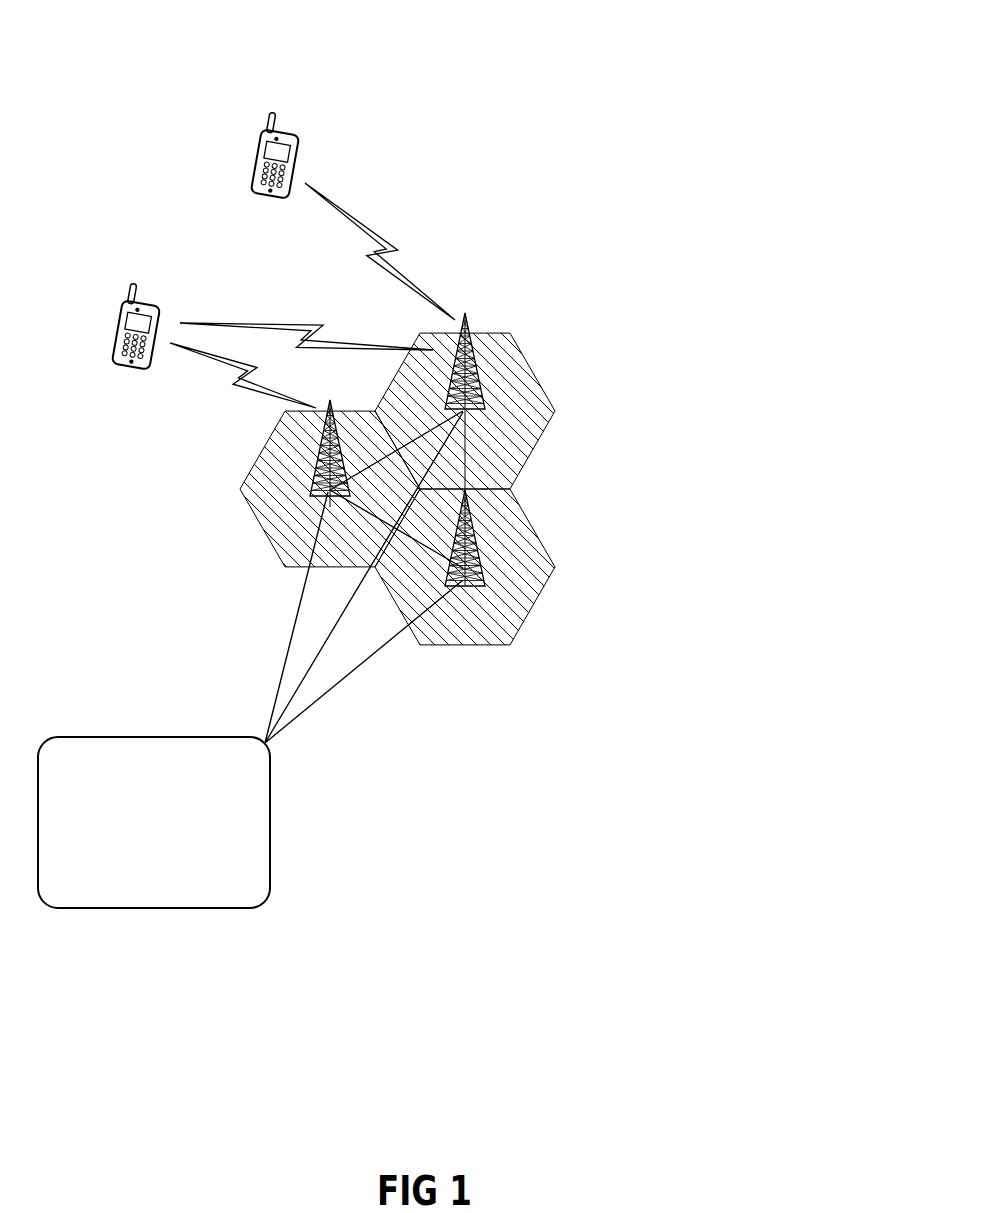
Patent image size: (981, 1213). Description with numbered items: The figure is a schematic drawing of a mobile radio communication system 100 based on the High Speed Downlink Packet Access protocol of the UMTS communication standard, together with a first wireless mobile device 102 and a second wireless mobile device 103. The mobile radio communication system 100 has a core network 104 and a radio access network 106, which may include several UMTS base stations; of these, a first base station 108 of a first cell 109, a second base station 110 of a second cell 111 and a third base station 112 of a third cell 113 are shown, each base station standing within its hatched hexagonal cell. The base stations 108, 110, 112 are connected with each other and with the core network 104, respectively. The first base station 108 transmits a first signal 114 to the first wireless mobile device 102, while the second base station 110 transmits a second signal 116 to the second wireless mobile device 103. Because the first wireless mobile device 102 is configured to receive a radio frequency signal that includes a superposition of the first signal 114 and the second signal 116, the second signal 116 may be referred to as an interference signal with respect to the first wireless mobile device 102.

The mobile radio communication system 100 is at (638, 130).
The first wireless mobile device 102 is at (116, 320).
The second wireless mobile device 103 is at (254, 152).
The core network 104 is at (272, 826).
The radio access network 106 is at (552, 463).
The first base station 108 is at (317, 466).
The first cell 109 is at (267, 515).
The second base station 110 is at (478, 374).
The second cell 111 is at (493, 345).
The third base station 112 is at (481, 550).
The third cell 113 is at (505, 613).
The first signal 114 is at (229, 384).
The second signal 116 is at (361, 229).